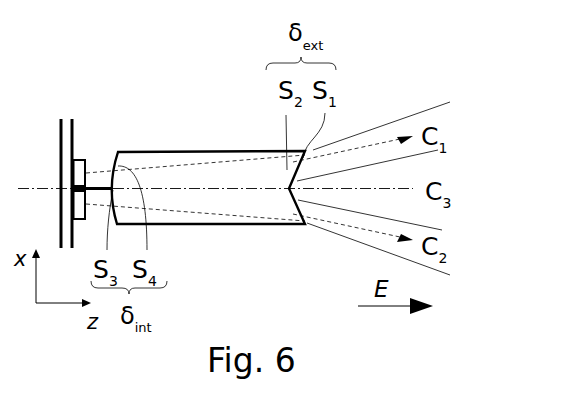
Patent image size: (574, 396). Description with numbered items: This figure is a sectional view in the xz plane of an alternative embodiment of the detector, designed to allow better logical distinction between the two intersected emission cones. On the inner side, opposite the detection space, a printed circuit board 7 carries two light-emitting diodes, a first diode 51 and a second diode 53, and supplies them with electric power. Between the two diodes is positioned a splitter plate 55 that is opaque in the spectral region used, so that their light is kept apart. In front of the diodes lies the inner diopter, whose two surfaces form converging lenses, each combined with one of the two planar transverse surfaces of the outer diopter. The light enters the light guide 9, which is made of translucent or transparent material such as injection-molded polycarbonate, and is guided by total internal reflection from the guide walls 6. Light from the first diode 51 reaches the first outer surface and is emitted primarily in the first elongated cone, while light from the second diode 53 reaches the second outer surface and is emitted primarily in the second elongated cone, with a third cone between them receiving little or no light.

The printed circuit board 7 is at (60, 122).
The second light-emitting diode 53 is at (71, 200).
The first light-emitting diode 51 is at (79, 159).
The splitter plate 55 is at (99, 172).
The guide walls 6 is at (156, 150).
The light guide 9 is at (203, 121).